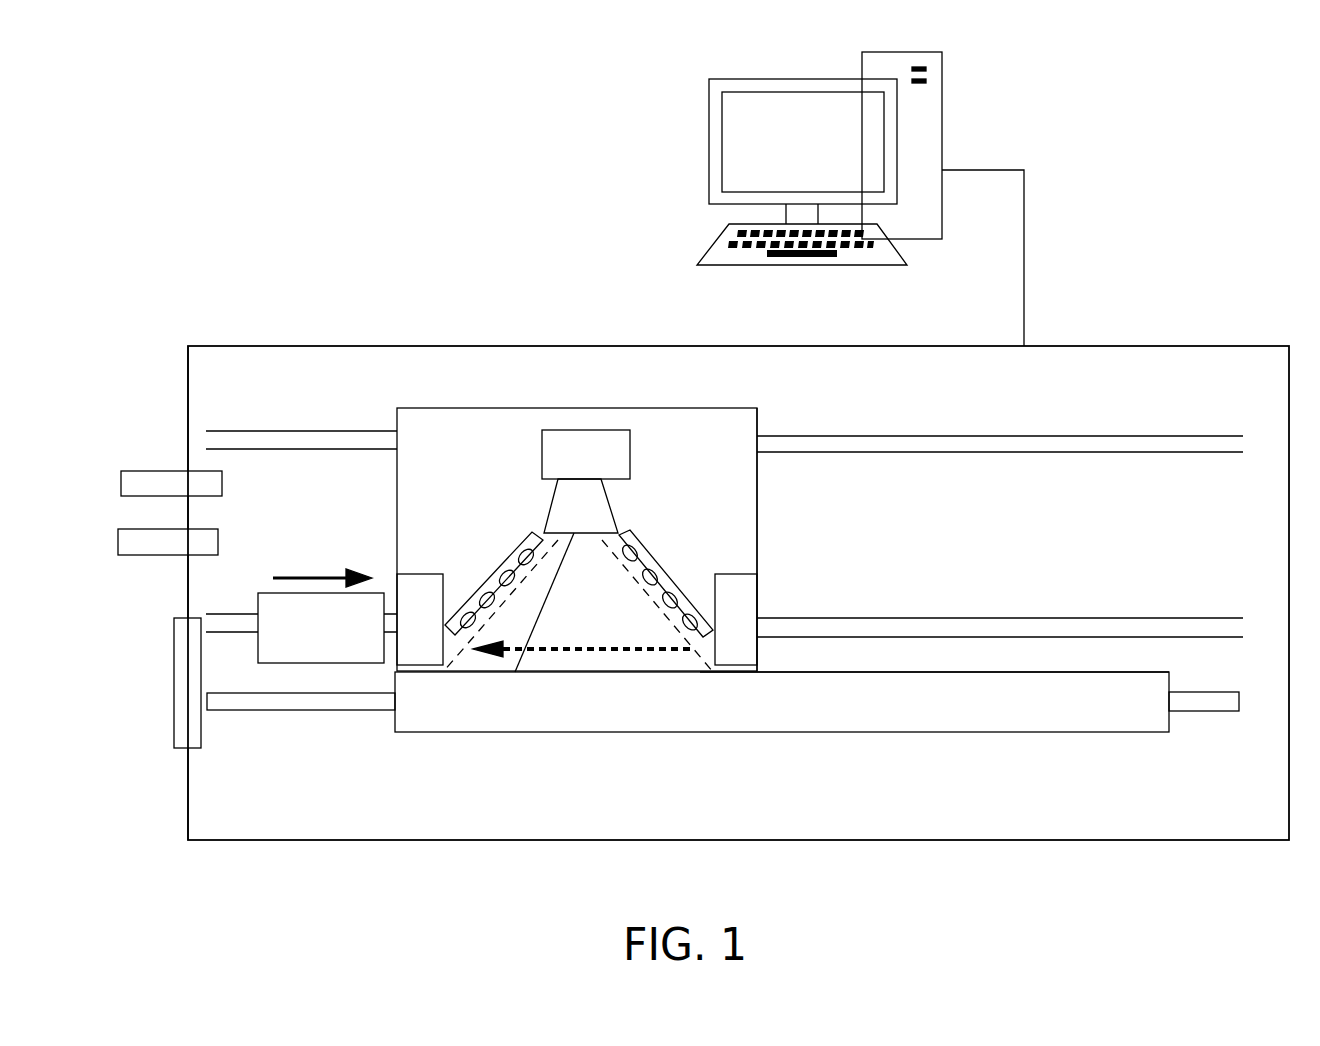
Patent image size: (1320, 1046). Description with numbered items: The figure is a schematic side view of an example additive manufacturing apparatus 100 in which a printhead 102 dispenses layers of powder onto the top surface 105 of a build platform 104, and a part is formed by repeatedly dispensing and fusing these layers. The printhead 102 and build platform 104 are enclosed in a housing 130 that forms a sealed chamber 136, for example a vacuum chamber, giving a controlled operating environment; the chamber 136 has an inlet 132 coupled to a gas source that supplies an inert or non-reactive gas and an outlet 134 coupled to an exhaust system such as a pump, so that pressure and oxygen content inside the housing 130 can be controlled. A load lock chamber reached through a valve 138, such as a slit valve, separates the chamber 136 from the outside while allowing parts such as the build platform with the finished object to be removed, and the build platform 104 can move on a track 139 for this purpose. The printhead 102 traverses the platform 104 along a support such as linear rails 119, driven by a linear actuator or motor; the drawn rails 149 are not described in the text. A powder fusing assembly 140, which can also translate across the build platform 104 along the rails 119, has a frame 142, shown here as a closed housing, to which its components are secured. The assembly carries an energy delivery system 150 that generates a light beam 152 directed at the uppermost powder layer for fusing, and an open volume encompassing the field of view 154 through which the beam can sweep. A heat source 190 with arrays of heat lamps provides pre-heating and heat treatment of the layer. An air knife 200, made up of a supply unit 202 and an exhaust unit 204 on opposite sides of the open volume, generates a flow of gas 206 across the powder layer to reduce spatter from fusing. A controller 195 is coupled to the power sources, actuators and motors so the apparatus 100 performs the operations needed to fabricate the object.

The additive manufacturing apparatus 100 is at (166, 274).
The printhead 102 is at (339, 641).
The build platform 104 is at (799, 714).
The top surface 105 is at (947, 670).
The linear rails 119 is at (1093, 632).
The housing 130 is at (305, 346).
The inlet 132 is at (140, 485).
The outlet 134 is at (138, 547).
The sealed chamber 136 is at (949, 549).
The valve 138 is at (187, 698).
The track 139 is at (310, 710).
The powder fusing assembly 140 is at (368, 493).
The frame 142 is at (757, 507).
The upper guide rail 149 is at (997, 445).
The energy delivery system 150 is at (520, 440).
The light beam 152 is at (540, 617).
The field of view 154 is at (627, 548).
The heat source 190 is at (670, 570).
The controller 195 is at (930, 127).
The air knife 200 is at (780, 603).
The supply unit 202 is at (738, 590).
The exhaust unit 204 is at (423, 587).
The flow of gas 206 is at (657, 655).